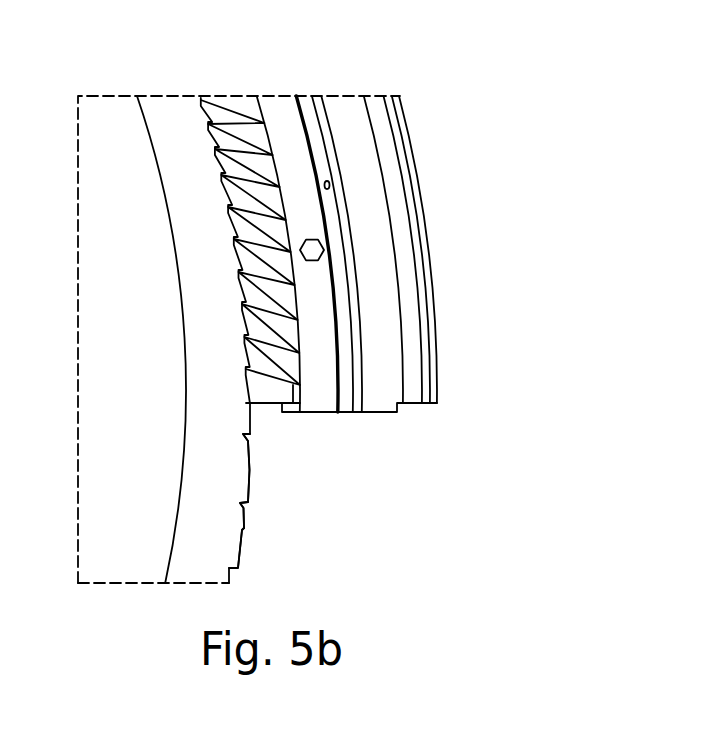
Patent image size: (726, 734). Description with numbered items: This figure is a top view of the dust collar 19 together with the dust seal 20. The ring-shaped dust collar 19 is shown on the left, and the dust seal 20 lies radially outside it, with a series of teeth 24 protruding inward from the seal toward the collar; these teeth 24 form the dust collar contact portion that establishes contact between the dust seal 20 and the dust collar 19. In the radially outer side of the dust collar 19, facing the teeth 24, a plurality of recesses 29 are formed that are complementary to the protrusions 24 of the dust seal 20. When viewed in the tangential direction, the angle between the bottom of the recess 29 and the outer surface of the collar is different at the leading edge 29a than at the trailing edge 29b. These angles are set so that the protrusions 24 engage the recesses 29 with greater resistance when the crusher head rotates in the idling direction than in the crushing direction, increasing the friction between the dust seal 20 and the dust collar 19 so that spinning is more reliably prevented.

The dust collar 19 is at (172, 307).
The dust seal 20 is at (452, 260).
The teeth 24 is at (218, 100).
The recesses 29 is at (262, 455).
The leading edge 29a is at (263, 516).
The trailing edge 29b is at (262, 544).